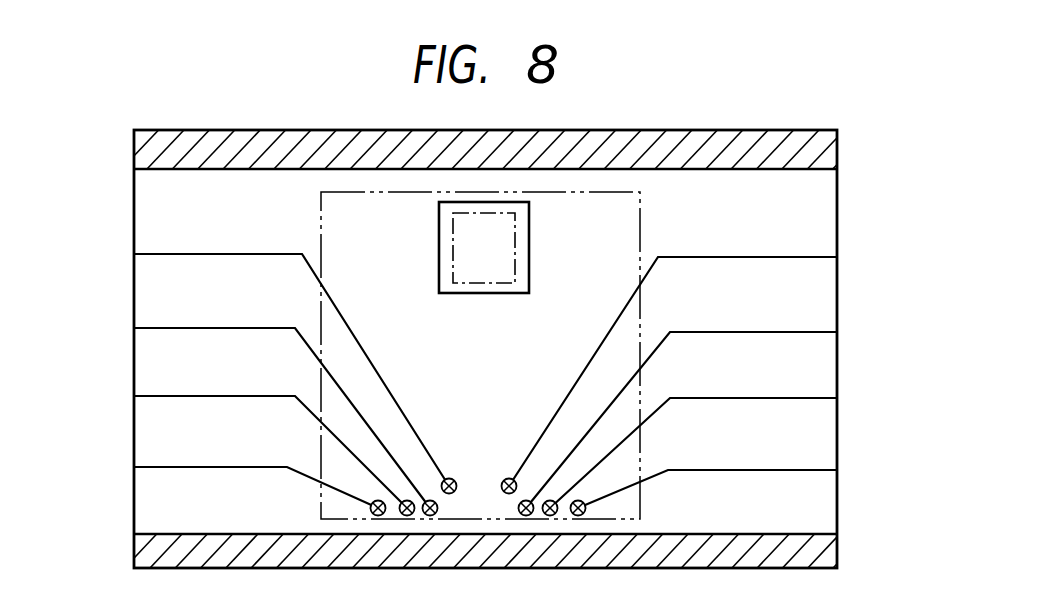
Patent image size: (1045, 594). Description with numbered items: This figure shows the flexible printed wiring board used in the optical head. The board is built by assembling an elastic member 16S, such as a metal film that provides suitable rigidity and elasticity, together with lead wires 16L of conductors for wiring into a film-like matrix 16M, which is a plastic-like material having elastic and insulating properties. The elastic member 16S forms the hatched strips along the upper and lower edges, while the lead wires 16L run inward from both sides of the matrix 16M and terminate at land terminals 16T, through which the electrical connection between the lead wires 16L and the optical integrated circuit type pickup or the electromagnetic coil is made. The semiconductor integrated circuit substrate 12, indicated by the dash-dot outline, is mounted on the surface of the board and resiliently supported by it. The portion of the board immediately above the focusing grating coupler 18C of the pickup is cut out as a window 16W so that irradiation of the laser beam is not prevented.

The semiconductor integrated circuit substrate 12 is at (617, 192).
The elastic member 16S is at (134, 140).
The lead wires 16L is at (813, 257).
The matrix 16M is at (840, 515).
The window 16W is at (529, 250).
The focusing grating coupler 18C is at (463, 276).
The land terminals 16T is at (504, 478).